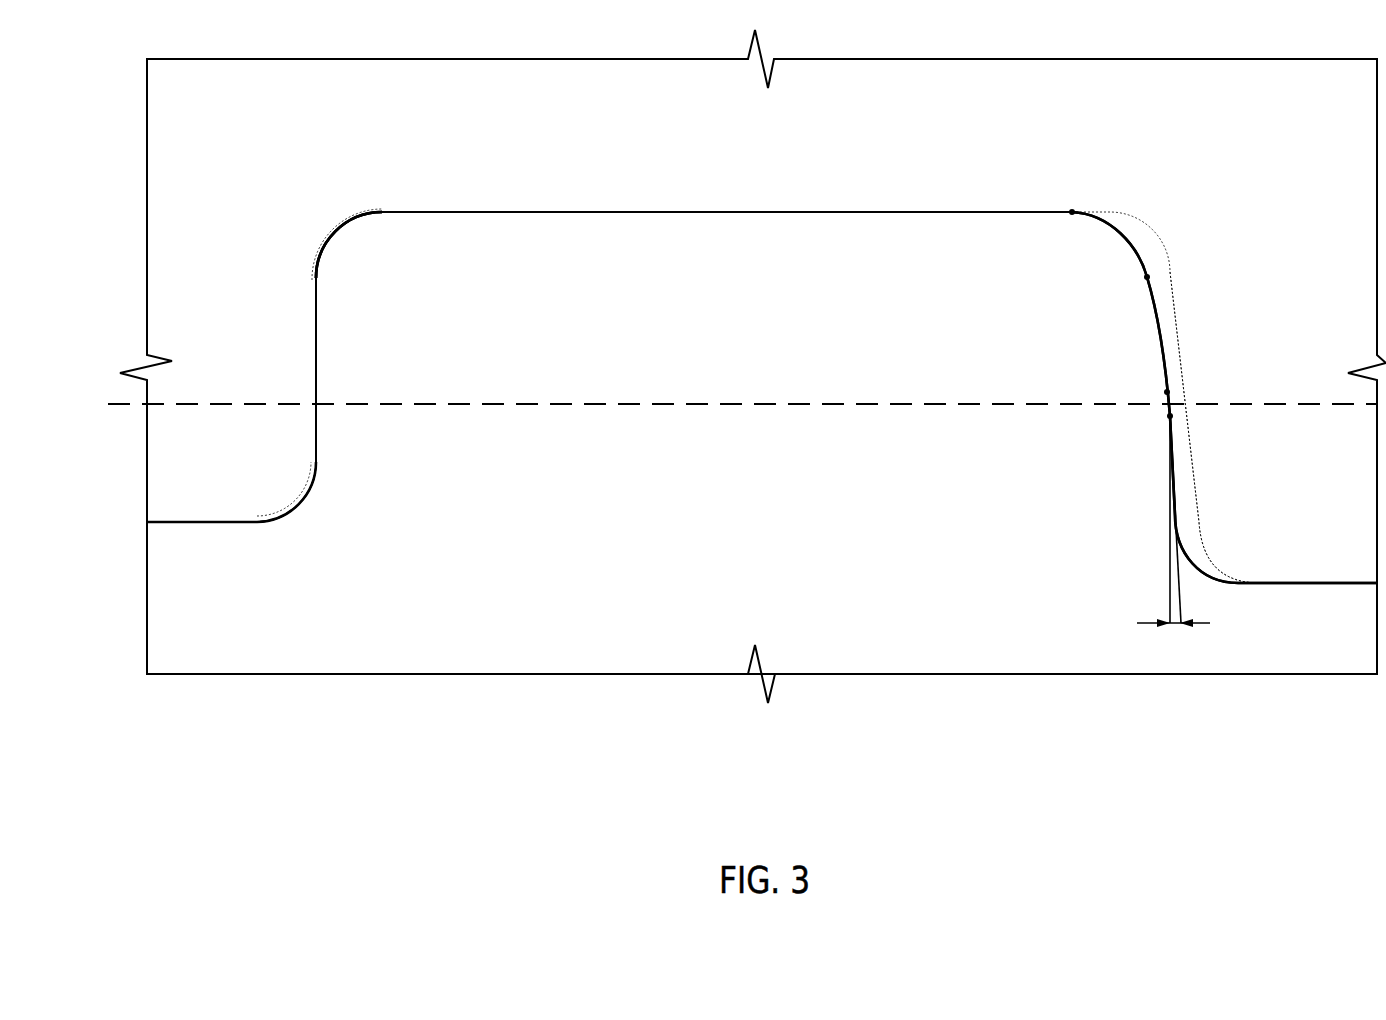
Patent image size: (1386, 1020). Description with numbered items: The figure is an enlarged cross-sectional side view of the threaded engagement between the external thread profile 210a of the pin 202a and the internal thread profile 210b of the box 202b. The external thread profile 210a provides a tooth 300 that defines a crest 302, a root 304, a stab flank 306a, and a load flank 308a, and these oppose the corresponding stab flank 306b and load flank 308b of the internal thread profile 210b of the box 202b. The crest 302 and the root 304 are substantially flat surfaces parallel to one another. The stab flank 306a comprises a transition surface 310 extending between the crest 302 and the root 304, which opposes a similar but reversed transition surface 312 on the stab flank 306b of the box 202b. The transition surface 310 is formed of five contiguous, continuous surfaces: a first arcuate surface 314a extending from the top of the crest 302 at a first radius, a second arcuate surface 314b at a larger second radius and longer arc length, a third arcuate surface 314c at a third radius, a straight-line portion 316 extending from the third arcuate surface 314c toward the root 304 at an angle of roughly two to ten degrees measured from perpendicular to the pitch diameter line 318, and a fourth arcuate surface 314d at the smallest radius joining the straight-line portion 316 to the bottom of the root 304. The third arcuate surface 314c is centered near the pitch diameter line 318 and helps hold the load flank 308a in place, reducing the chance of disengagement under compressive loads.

The pin 202a is at (771, 572).
The box 202b is at (772, 147).
The external thread profile 210a is at (341, 249).
The internal thread profile 210b is at (329, 205).
The tooth 300 is at (487, 178).
The crest 302 is at (914, 212).
The root 304 is at (1341, 583).
The stab flank 306a is at (1179, 340).
The stab flank 306b is at (1178, 478).
The load flank 308a is at (303, 369).
The load flank 308b is at (331, 339).
The transition surface 310 is at (1153, 297).
The transition surface 312 is at (1170, 458).
The first arcuate surface 314a is at (1127, 240).
The second arcuate surface 314b is at (1163, 332).
The third arcuate surface 314c is at (1168, 408).
The fourth arcuate surface 314d is at (1190, 562).
The straight-line portion 316 is at (1172, 518).
The pitch diameter line 318 is at (120, 406).